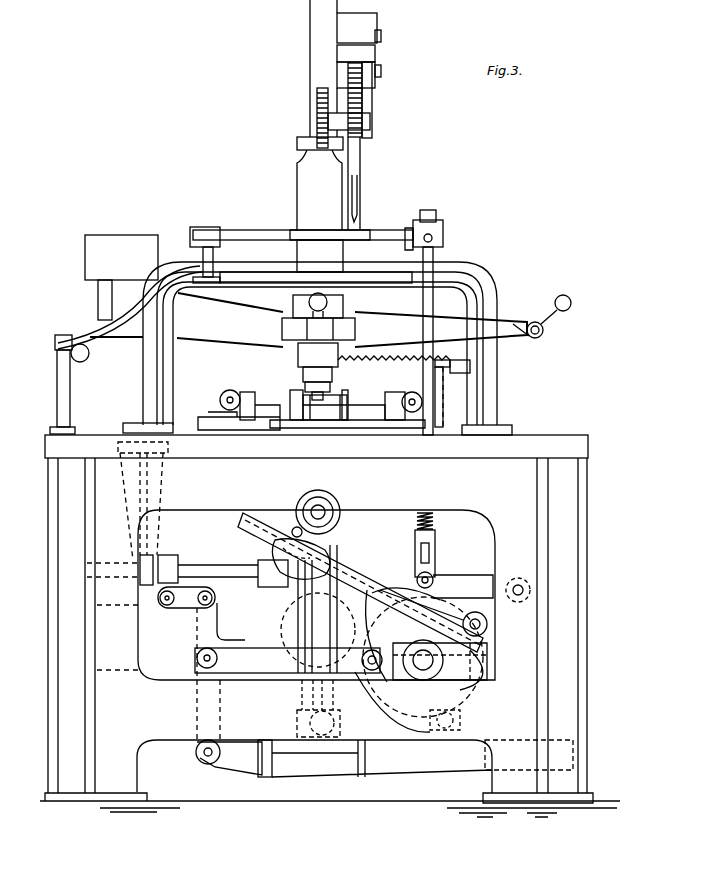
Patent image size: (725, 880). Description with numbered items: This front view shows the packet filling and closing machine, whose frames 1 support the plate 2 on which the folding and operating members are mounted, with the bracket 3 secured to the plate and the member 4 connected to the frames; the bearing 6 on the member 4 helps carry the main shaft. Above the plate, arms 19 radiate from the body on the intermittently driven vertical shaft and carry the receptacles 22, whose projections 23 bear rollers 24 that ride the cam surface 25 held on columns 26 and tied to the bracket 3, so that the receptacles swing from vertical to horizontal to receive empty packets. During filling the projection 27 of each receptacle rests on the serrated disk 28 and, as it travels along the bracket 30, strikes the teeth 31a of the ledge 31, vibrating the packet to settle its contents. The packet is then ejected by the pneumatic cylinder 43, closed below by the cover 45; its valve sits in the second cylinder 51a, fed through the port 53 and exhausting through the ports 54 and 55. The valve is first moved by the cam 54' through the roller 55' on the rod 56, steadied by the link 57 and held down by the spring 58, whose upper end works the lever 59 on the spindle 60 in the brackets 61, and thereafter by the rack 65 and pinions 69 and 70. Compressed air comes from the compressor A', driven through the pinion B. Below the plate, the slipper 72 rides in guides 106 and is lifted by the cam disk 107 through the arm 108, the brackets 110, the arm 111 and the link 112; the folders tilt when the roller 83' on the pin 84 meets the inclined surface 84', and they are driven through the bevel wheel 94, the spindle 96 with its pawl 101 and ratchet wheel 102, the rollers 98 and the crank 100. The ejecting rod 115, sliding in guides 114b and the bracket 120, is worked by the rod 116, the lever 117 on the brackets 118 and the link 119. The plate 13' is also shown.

The cylinder 43 is at (312, 18).
The second cylinder 51a is at (377, 22).
The exhaust port 54 is at (391, 38).
The port 53 is at (375, 58).
The exhaust port 55 is at (392, 75).
The toothed rack 65 is at (372, 90).
The pinion 70 is at (317, 118).
The pinion 69 is at (370, 124).
The second cover 45 is at (297, 148).
The spindle 60 is at (248, 227).
The brackets 61 is at (205, 244).
The lever 59 is at (436, 224).
The rod 56 is at (433, 256).
The bracket 3 is at (163, 372).
The receptacles 22 is at (497, 289).
The projecting ledge or wall 31 is at (380, 318).
The arms 19 is at (308, 320).
The rollers 24 is at (309, 300).
The projections 23 is at (545, 328).
The cam surface 25 is at (90, 330).
The columns 26 is at (57, 381).
The plate 13' is at (274, 356).
The projection 27 is at (470, 363).
The serrated disk 28 is at (333, 374).
The bracket 30 is at (449, 397).
The teeth or serrations 31a is at (355, 394).
The roller 83' is at (321, 395).
The inclined surface 84' is at (298, 411).
The pin 84 is at (311, 421).
The plate 2 is at (316, 446).
The frames 1 is at (330, 637).
The compressor A' is at (291, 566).
The spindle 96 is at (336, 505).
The ratchet wheel 102 is at (322, 503).
The pawl 101 is at (294, 527).
The bevel wheel 94 is at (360, 563).
The rollers 98 is at (275, 545).
The vertically disposed guides 106 is at (298, 625).
The slipper 72 is at (337, 600).
The guides 114b is at (268, 587).
The rod 115 is at (208, 569).
The bracket 120 is at (153, 540).
The link 119 is at (170, 606).
The lever 117 is at (203, 650).
The rod 116 is at (288, 638).
The spring 58 is at (435, 536).
The roller 55' is at (443, 571).
The radius bar or link 57 is at (436, 597).
The disk 107 is at (487, 620).
The cam 54' is at (424, 639).
The pinion B is at (423, 657).
The crank 100 is at (487, 637).
The bearing 6 is at (392, 702).
The link 112 is at (297, 700).
The arm 108 is at (460, 715).
The brackets 110 is at (529, 744).
The member 4 is at (314, 766).
The brackets 118 is at (229, 757).
The arm 111 is at (303, 758).